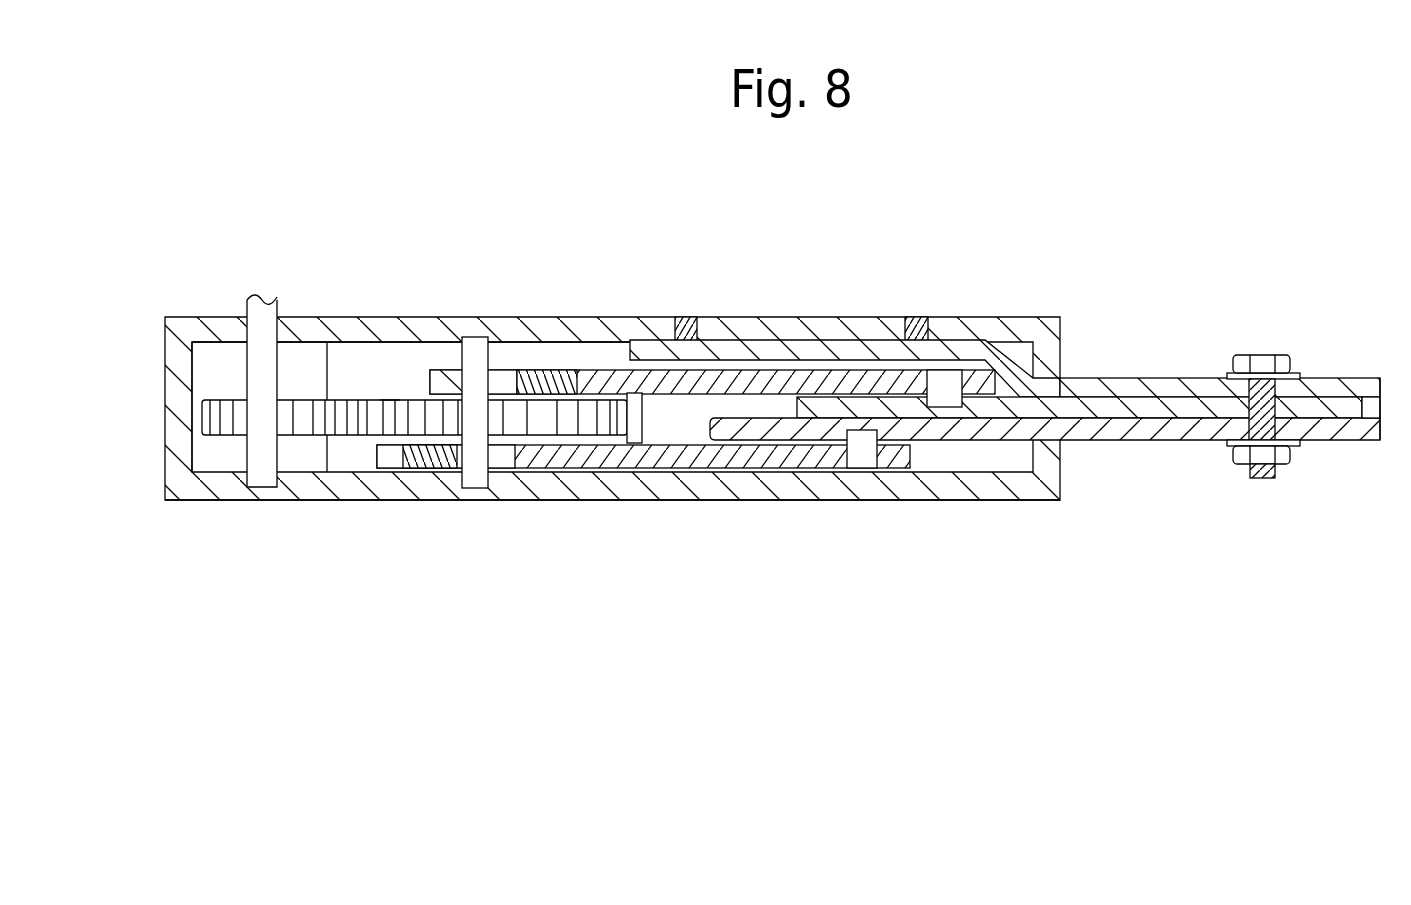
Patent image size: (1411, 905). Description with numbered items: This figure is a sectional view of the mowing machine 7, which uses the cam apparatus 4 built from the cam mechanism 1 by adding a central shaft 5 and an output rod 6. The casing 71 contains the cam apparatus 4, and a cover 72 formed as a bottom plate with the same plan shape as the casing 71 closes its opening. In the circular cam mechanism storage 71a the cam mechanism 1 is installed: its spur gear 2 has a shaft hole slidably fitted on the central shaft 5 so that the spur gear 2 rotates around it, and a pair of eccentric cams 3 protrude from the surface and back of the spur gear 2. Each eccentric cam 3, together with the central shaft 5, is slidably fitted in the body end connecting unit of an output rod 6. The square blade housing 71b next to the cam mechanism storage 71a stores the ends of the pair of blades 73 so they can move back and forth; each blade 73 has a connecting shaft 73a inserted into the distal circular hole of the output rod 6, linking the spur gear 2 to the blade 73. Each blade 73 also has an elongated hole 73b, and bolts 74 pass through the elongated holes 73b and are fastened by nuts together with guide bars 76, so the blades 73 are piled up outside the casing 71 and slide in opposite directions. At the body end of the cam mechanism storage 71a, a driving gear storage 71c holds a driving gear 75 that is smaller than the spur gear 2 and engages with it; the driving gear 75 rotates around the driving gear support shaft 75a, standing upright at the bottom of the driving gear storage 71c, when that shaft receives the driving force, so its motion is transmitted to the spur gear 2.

The cam mechanism 1 is at (344, 452).
The spur gear 2 is at (385, 405).
The eccentric cam 3 is at (553, 370).
The cam apparatus 4 is at (507, 606).
The central shaft 5 is at (478, 338).
The output rod 6 is at (532, 468).
The mowing machine 7 is at (858, 317).
The casing 71 is at (633, 322).
The cam mechanism storage 71a is at (377, 352).
The blade housing 71b is at (742, 400).
The driving gear storage 71c is at (217, 355).
The cover 72 is at (685, 498).
The blade 73 is at (1168, 405).
The connecting shaft 73a is at (950, 375).
The elongated hole 73b is at (1318, 388).
The bolt 74 is at (1262, 355).
The driving gear 75 is at (213, 400).
The driving gear support shaft 75a is at (263, 352).
The guide bar 76 is at (1107, 378).